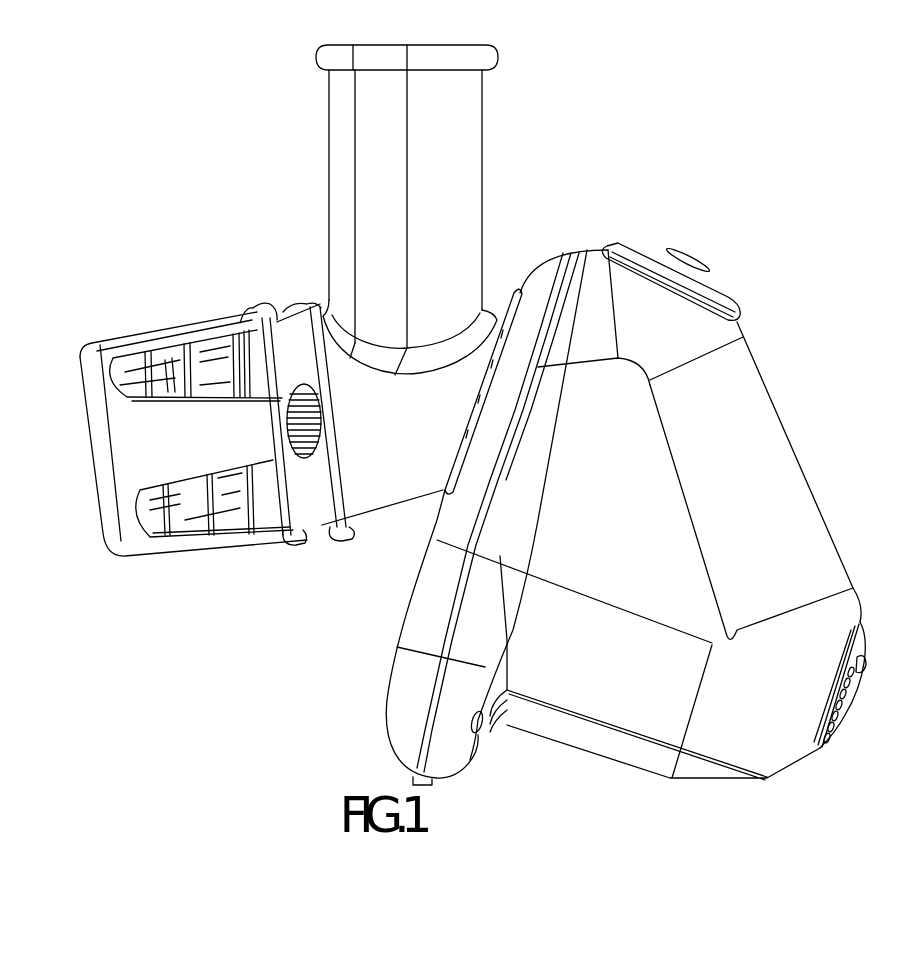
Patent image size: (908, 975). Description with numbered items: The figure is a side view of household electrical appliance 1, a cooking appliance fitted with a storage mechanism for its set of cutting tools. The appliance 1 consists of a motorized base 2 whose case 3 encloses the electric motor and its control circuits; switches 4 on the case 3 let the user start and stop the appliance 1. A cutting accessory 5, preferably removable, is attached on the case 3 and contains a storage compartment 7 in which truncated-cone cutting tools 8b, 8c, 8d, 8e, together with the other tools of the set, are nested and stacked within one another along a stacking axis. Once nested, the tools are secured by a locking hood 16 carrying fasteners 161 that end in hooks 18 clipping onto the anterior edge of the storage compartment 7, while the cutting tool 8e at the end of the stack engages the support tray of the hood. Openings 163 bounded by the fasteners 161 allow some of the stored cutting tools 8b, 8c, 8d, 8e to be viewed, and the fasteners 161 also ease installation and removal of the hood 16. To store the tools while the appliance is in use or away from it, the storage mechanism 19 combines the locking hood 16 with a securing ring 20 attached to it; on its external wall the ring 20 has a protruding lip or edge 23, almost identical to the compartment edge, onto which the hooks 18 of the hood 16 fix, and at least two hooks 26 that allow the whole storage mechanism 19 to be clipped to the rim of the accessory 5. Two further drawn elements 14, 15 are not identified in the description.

The household electrical appliance 1 is at (631, 460).
The motorized base 2 is at (631, 514).
The case 3 is at (820, 531).
The switches 4 is at (722, 291).
The cutting accessory 5 is at (495, 257).
The storage compartment 7 is at (385, 497).
The tube 14 is at (471, 131).
The tube end cap 15 is at (454, 60).
The locking hood 16 is at (179, 415).
The hooks 18 is at (277, 327).
The storage mechanism 19 is at (179, 409).
The securing ring 20 is at (311, 477).
The protruding lip or edge 23 is at (233, 337).
The hooks 26 is at (340, 541).
The fasteners 161 is at (170, 323).
The openings 163 is at (170, 363).
The cutting tool 8b is at (276, 521).
The cutting tool 8c is at (230, 511).
The cutting tool 8d is at (185, 531).
The cutting tool 8e is at (150, 521).